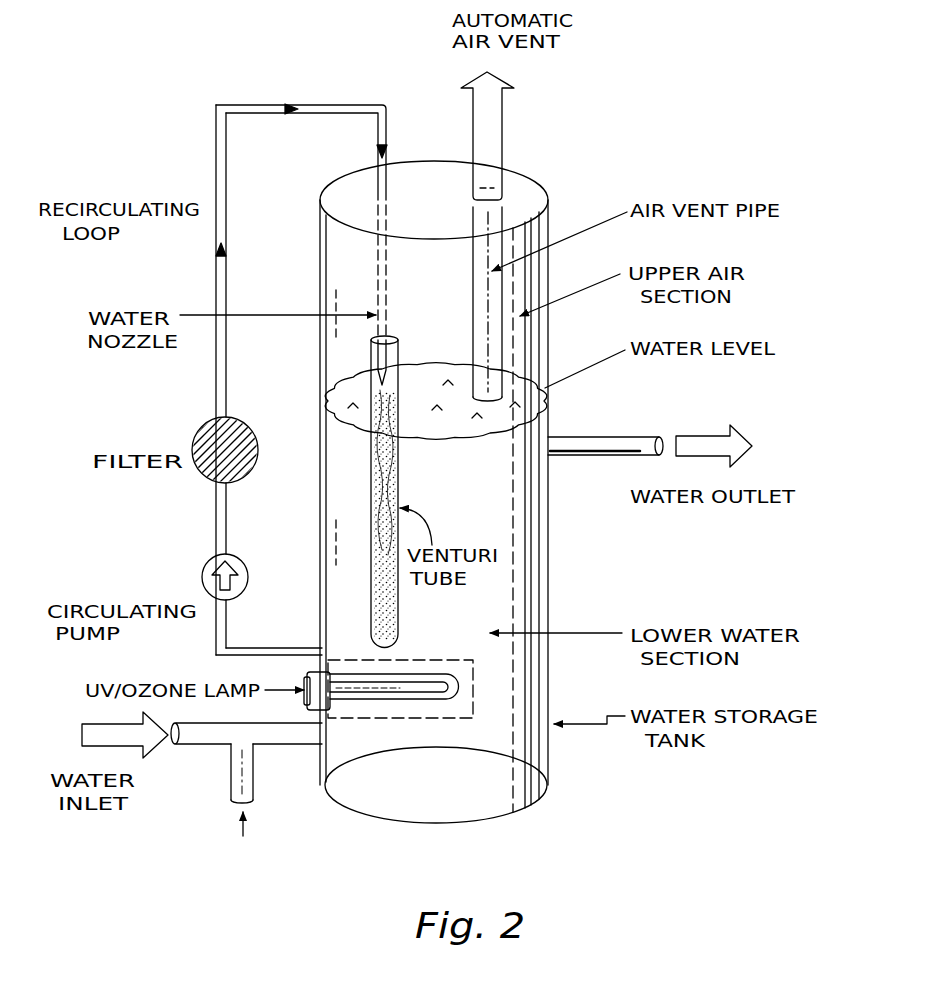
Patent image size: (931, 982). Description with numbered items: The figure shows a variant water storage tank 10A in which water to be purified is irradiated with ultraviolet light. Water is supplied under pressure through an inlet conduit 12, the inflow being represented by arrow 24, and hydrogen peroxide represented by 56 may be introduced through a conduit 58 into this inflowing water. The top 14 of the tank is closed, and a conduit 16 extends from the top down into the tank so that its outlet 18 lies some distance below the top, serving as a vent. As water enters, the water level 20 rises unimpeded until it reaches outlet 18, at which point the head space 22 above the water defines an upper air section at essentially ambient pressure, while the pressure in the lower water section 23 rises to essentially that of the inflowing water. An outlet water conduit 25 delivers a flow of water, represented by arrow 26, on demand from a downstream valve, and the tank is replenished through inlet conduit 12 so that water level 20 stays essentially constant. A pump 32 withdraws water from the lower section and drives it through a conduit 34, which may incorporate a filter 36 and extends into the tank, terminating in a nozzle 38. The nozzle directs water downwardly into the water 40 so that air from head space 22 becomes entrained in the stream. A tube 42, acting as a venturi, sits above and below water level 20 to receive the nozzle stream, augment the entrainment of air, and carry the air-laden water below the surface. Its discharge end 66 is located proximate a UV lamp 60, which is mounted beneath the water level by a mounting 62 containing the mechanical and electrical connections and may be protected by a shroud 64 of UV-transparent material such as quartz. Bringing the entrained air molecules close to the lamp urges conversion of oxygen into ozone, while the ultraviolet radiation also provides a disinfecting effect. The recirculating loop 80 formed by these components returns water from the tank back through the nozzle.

The water storage tank 10A is at (555, 592).
The inlet conduit 12 is at (228, 722).
The top 14 is at (525, 180).
The conduit 16 is at (473, 297).
The outlet 18 is at (481, 394).
The water level 20 is at (549, 419).
The head space 22 is at (545, 205).
The lower water section 23 is at (548, 618).
The arrow 24 is at (158, 750).
The outlet water conduit 25 is at (640, 458).
The arrow 26 is at (715, 432).
The pump 32 is at (207, 565).
The conduit 34 is at (333, 105).
The filter 36 is at (205, 428).
The nozzle 38 is at (371, 351).
The water 40 is at (548, 550).
The tube 42 is at (371, 486).
The hydrogen peroxide 56 is at (247, 820).
The conduit 58 is at (256, 780).
The UV lamp 60 is at (444, 691).
The mounting 62 is at (306, 676).
The shroud 64 is at (436, 718).
The discharge end 66 is at (401, 647).
The recirculating loop 80 is at (232, 634).